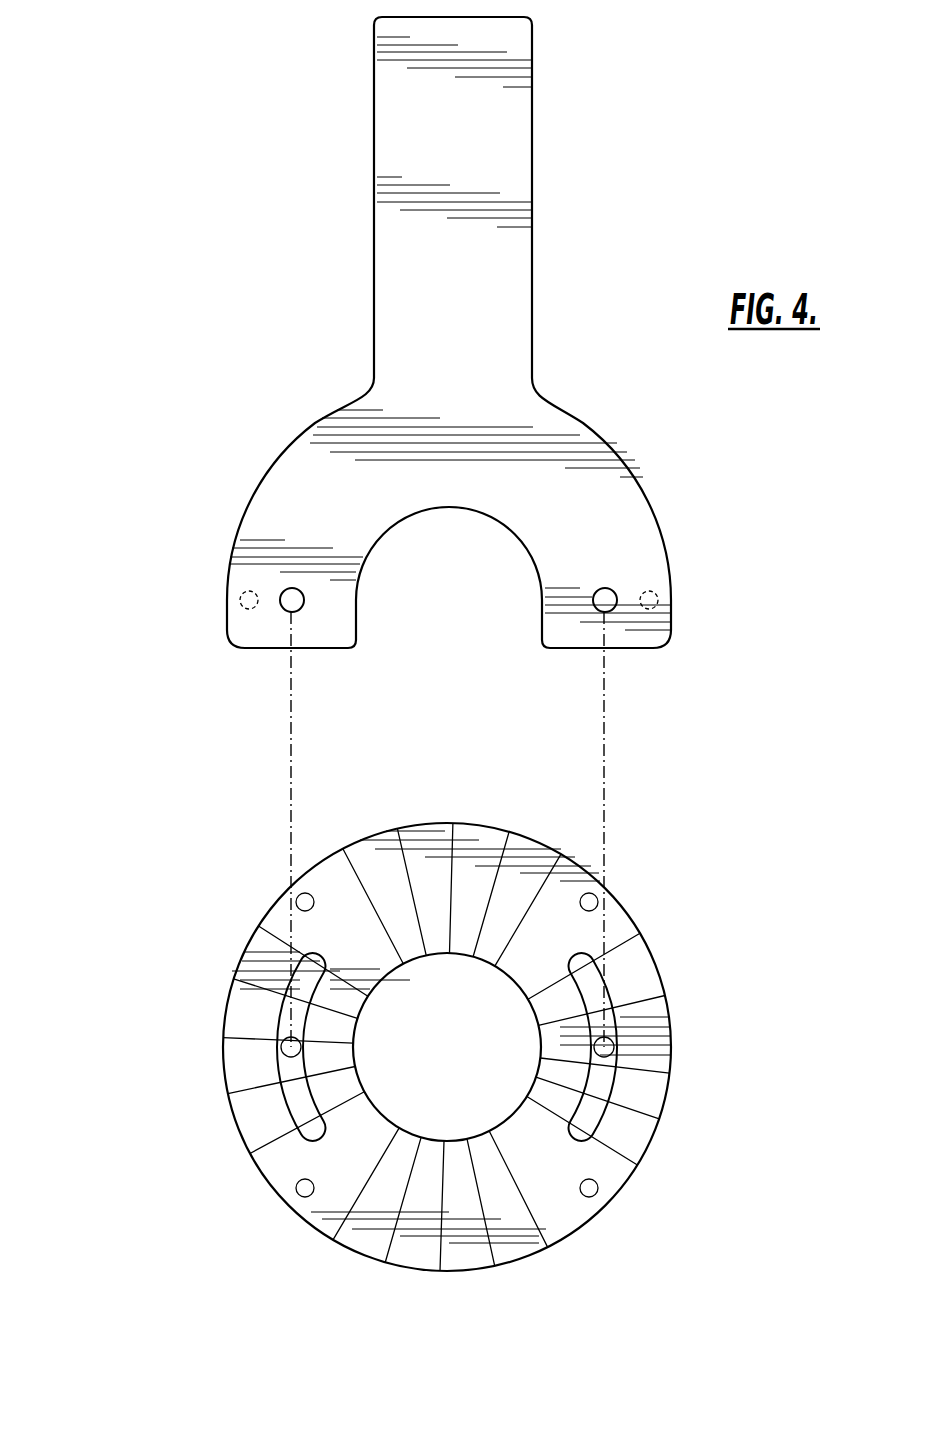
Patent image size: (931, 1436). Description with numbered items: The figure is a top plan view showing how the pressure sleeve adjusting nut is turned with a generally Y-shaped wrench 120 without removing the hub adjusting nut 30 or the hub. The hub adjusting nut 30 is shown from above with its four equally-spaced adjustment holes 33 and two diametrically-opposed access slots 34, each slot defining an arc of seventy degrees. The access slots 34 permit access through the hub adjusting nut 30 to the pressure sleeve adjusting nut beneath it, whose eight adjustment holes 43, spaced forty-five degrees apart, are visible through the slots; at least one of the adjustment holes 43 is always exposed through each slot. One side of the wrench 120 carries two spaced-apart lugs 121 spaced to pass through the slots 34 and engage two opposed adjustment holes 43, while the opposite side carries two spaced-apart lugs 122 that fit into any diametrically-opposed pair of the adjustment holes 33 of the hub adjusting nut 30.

The Y-shaped wrench 120 is at (493, 305).
The lugs 121 is at (284, 590).
The lugs 122 is at (248, 610).
The hub adjusting nut 30 is at (212, 932).
The adjustment holes 33 is at (313, 897).
The access slots 34 is at (291, 1100).
The adjustment holes 43 is at (282, 1054).